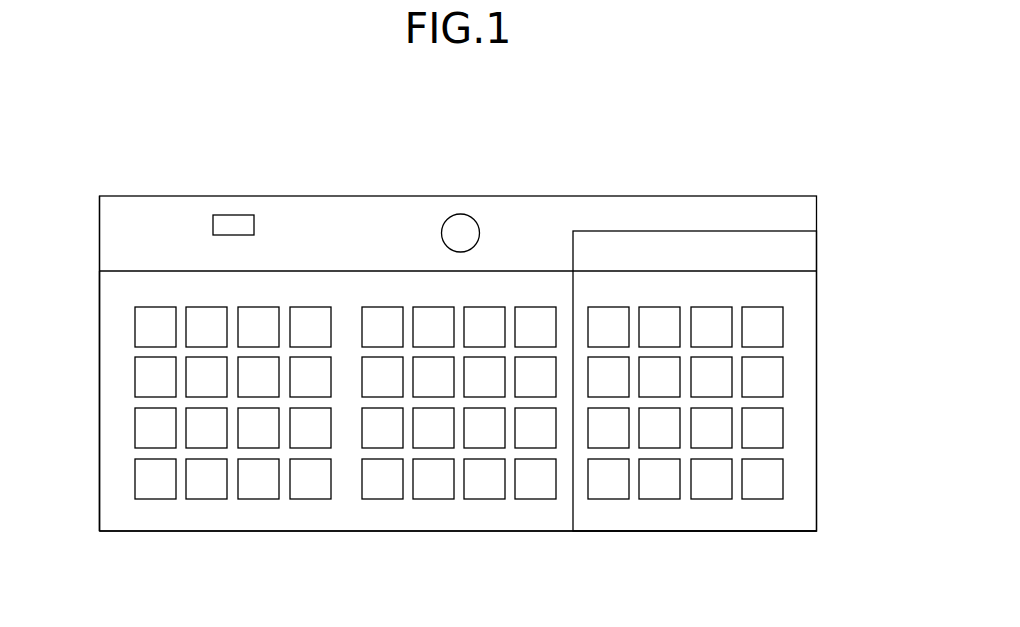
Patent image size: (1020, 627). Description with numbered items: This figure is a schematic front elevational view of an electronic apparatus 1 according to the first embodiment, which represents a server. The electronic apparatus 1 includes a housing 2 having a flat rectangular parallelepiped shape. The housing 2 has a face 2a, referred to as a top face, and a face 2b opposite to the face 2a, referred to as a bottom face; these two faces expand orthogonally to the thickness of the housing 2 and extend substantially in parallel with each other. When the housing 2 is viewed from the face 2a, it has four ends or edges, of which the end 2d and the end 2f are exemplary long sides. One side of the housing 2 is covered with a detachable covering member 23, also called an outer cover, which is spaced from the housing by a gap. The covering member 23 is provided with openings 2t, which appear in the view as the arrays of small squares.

The electronic apparatus 1 is at (669, 139).
The housing 2 is at (725, 192).
The face 2a is at (302, 195).
The face 2b is at (400, 535).
The end 2d is at (817, 418).
The end 2f is at (99, 417).
The openings 2t is at (190, 483).
The covering member 23 is at (99, 297).